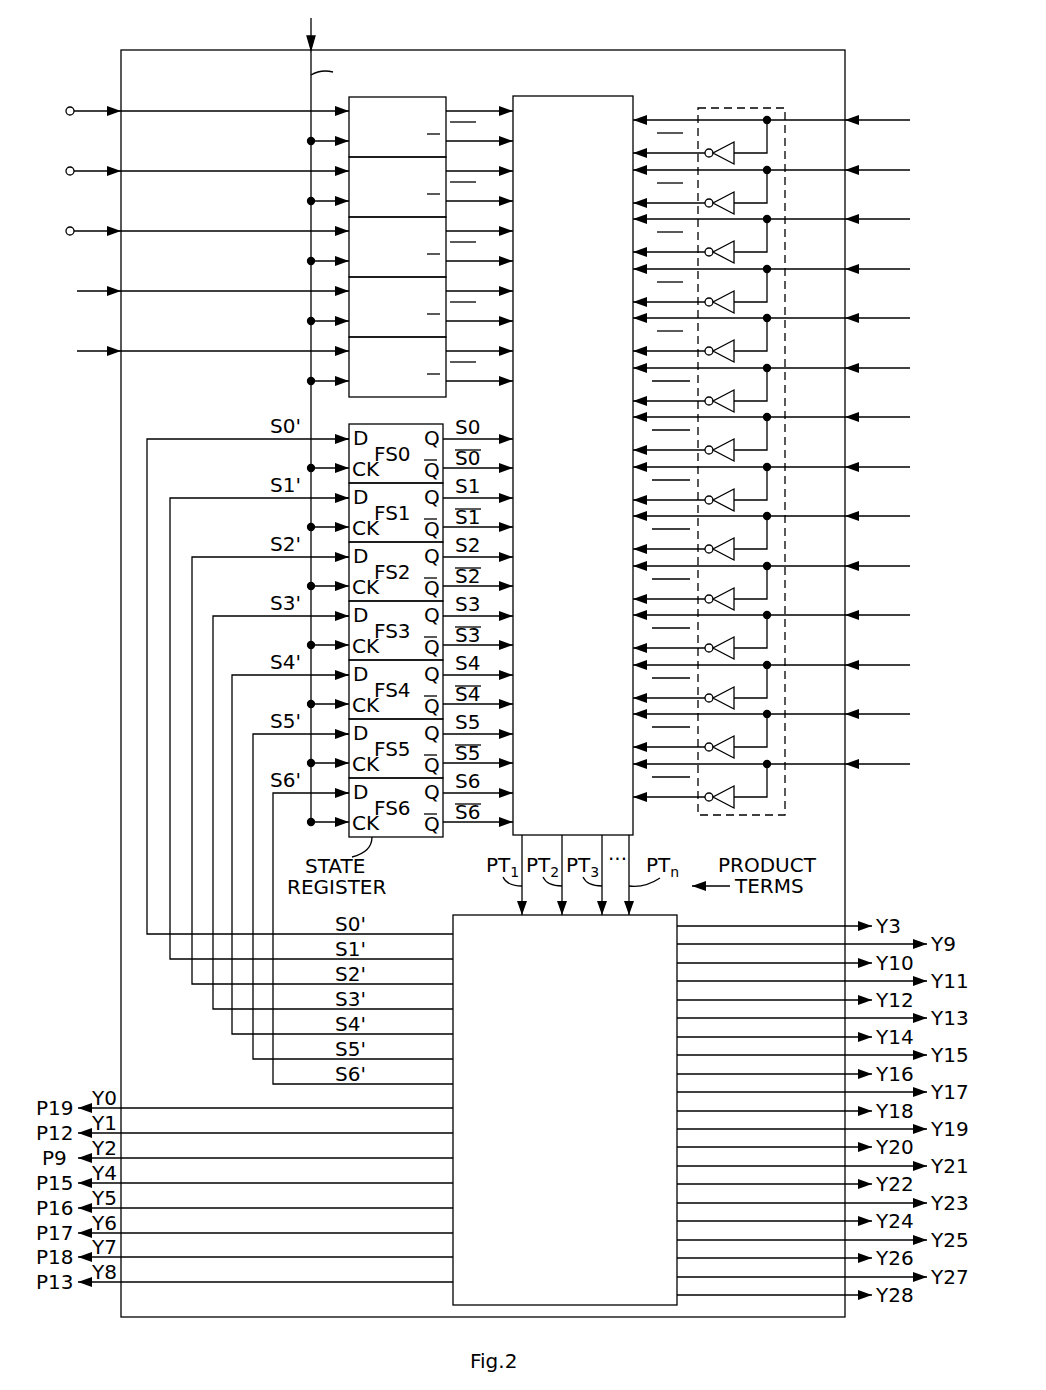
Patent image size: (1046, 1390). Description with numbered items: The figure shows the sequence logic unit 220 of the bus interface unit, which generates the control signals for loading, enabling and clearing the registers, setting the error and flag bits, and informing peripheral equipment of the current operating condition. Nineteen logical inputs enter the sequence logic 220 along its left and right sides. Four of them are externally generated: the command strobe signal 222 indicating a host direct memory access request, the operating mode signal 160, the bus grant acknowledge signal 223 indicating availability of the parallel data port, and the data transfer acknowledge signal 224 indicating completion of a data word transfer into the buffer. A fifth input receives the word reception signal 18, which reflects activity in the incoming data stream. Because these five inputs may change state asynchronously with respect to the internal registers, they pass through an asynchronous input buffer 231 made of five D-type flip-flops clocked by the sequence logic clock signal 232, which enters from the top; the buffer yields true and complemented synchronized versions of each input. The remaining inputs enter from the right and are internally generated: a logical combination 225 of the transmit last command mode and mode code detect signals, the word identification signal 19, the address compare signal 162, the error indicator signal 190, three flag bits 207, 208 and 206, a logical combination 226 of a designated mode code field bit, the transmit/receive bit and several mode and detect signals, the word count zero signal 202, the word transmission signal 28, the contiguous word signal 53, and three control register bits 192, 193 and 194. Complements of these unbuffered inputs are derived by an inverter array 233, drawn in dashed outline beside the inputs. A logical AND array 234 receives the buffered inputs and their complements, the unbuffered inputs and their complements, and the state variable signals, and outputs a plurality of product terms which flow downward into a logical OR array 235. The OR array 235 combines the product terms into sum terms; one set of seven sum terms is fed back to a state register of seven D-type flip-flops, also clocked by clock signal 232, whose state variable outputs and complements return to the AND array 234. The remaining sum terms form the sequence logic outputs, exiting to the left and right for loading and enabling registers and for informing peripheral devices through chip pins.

The sequence logic unit 220 is at (575, 50).
The sequence logic clock signal 232 is at (311, 28).
The asynchronous input buffer 231 is at (398, 97).
The inverter array 233 is at (732, 108).
The AND array 234 is at (573, 465).
The OR array 235 is at (565, 1110).
The command strobe signal 222 is at (192, 103).
The operating mode signal 160 is at (189, 163).
The bus grant acknowledge signal 223 is at (192, 223).
The data transfer acknowledge signal 224 is at (198, 283).
The word reception signal 18 is at (213, 338).
The logical combination of transmit last command mode and mode code detect signals 225 is at (771, 109).
The word identification signal 19 is at (771, 159).
The address compare signal 162 is at (771, 208).
The error indicator signal 190 is at (771, 258).
The flag bit 207 is at (771, 307).
The flag bit 208 is at (771, 357).
The flag bit 206 is at (771, 406).
The logical combination of mode code field bit, transmit/receive bit and mode signal 226 is at (771, 456).
The word count zero signal 202 is at (771, 505).
The word transmission signal 28 is at (771, 555).
The contiguous word signal 53 is at (771, 604).
The control register bit 192 is at (771, 654).
The control register bit 193 is at (771, 703).
The control register bit 194 is at (771, 753).